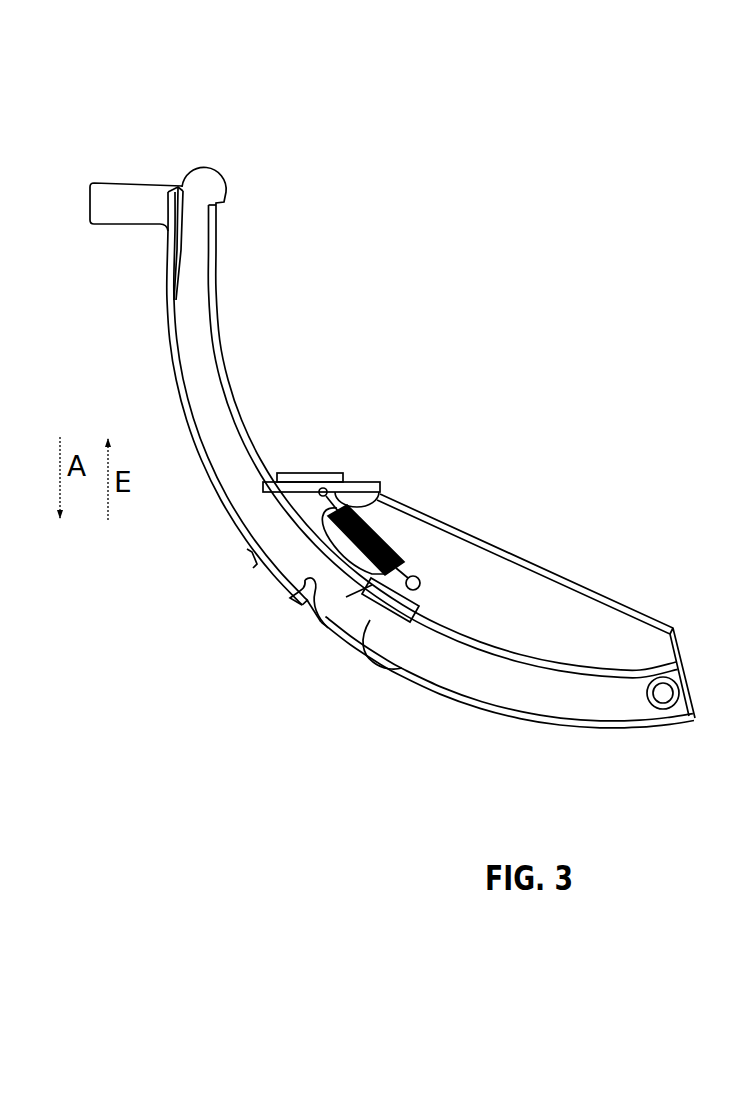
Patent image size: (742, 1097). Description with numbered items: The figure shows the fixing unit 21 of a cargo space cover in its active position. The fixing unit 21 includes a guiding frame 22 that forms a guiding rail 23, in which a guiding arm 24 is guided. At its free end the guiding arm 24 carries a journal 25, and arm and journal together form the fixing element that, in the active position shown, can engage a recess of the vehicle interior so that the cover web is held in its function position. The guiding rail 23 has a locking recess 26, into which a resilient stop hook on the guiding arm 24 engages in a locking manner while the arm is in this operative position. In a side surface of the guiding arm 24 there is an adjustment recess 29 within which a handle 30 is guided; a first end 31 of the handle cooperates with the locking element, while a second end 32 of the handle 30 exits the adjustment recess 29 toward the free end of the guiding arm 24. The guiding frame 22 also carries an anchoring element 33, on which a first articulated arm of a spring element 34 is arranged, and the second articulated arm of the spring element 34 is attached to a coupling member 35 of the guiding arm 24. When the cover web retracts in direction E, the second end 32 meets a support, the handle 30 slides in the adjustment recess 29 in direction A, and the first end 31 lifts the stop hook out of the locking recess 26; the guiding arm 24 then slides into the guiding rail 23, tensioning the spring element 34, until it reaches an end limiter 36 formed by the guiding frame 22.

The fixing unit 21 is at (455, 358).
The guiding frame 22 is at (578, 566).
The guiding rail 23 is at (584, 696).
The guiding arm 24 is at (230, 370).
The journal 25 is at (114, 215).
The locking recess 26 is at (293, 613).
The adjustment recess 29 is at (380, 630).
The handle 30 is at (200, 281).
The first end of the handle 31 is at (272, 527).
The second end of the handle 32 is at (215, 175).
The anchoring element 33 is at (372, 474).
The spring element 34 is at (393, 534).
The coupling member 35 is at (428, 579).
The end limiter 36 is at (660, 684).